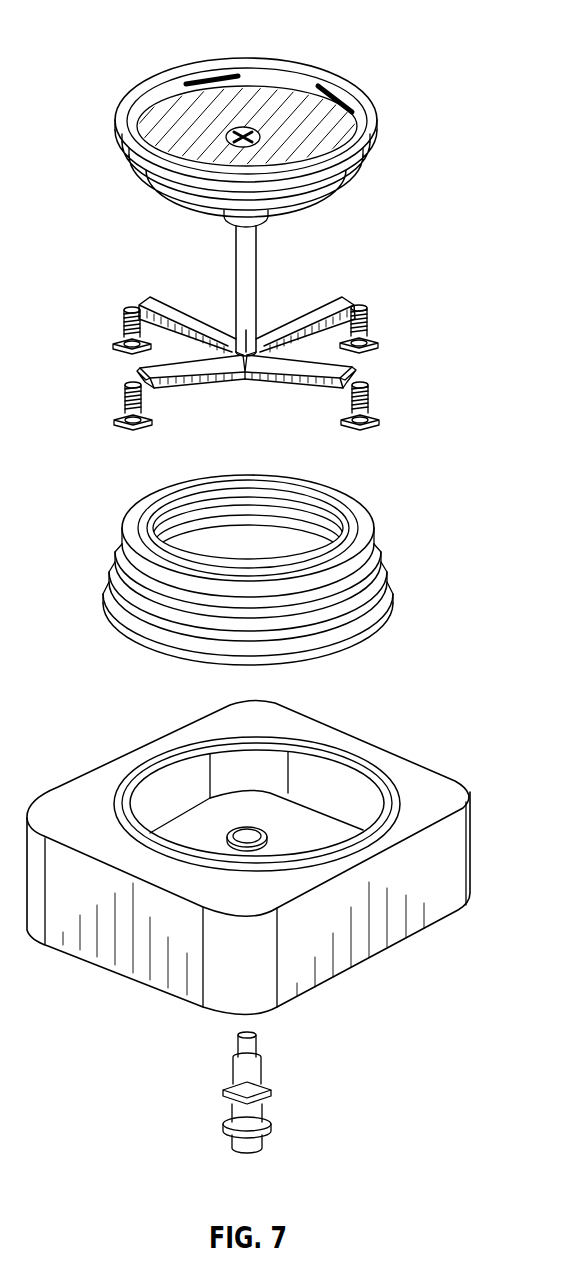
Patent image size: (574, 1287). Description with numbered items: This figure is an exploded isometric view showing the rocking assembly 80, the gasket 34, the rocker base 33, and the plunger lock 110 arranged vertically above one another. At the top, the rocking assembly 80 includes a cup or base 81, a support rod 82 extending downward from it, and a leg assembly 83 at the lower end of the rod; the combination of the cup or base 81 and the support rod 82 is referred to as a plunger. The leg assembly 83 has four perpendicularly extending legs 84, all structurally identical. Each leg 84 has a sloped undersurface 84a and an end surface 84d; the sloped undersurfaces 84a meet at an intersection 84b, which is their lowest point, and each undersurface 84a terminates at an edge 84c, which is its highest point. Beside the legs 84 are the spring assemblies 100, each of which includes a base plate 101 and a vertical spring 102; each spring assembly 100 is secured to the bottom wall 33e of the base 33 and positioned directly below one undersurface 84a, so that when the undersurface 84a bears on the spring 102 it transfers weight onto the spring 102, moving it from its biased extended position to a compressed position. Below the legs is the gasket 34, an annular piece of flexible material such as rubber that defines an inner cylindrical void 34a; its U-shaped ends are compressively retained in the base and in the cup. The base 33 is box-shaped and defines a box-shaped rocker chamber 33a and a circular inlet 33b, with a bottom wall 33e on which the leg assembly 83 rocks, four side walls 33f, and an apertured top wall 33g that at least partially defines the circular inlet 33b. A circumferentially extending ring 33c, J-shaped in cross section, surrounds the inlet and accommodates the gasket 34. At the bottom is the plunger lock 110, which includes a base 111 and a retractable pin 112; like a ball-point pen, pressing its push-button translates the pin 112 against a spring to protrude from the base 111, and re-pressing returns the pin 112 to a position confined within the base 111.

The rocking assembly 80 is at (137, 37).
The cup or base 81 is at (125, 110).
The support rod 82 is at (242, 262).
The leg assembly 83 is at (173, 301).
The leg 84 is at (172, 368).
The sloped undersurface 84a is at (300, 387).
The intersection 84b is at (246, 379).
The edge 84c is at (356, 377).
The end surface 84d is at (138, 370).
The spring assembly 100 is at (383, 326).
The base plate 101 is at (367, 433).
The vertical spring 102 is at (368, 407).
The gasket 34 is at (383, 549).
The inner cylindrical void 34a is at (192, 525).
The base 33 is at (454, 764).
The rocker chamber 33a is at (293, 825).
The circular inlet 33b is at (194, 786).
The ring 33c is at (262, 740).
The bottom wall 33e is at (175, 836).
The side wall 33f is at (120, 957).
The top wall 33g is at (402, 767).
The plunger lock 110 is at (268, 1106).
The base 111 is at (228, 1117).
The retractable pin 112 is at (238, 1043).